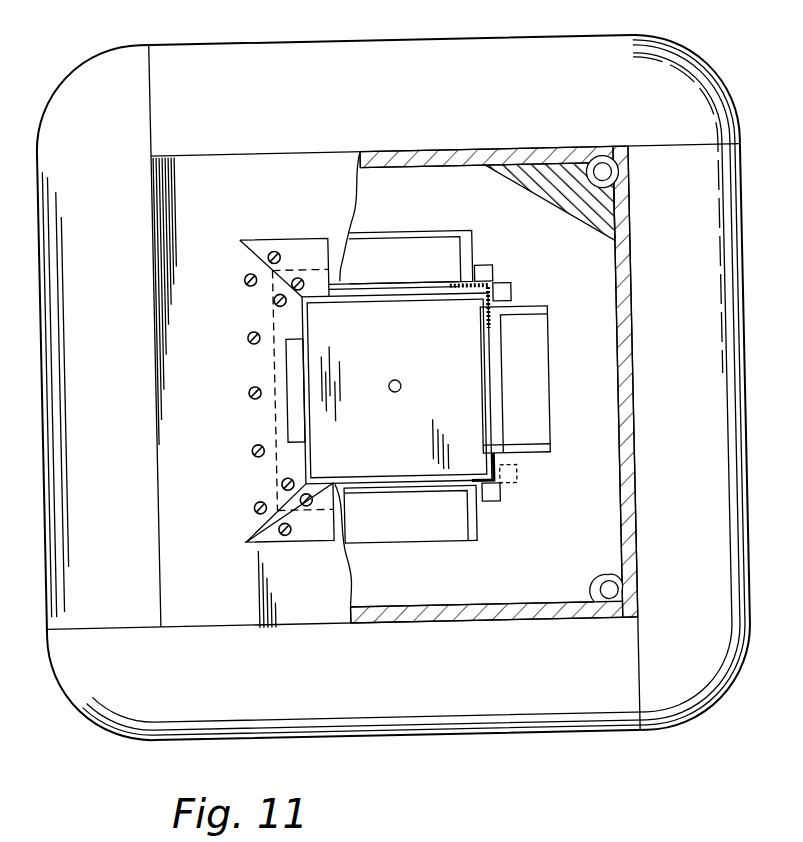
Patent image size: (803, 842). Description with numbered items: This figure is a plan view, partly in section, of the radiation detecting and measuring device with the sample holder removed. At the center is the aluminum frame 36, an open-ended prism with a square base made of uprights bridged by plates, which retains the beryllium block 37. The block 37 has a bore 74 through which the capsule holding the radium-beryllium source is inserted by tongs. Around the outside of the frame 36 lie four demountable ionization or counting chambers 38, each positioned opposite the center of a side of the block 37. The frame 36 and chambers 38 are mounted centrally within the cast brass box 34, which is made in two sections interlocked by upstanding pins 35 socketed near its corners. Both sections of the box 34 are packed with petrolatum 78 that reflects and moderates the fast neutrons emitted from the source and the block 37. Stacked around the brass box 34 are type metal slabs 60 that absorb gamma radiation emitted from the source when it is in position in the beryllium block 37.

The type metal slabs 60 is at (334, 99).
The cast brass box 34 is at (634, 459).
The petrolatum 78 is at (589, 212).
The upstanding pins 35 is at (617, 176).
The beryllium block 37 is at (405, 360).
The bore 74 is at (401, 387).
The ionization chambers 38 is at (430, 246).
The aluminum frame 36 is at (474, 301).